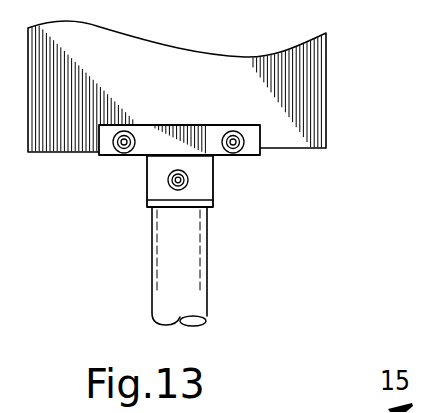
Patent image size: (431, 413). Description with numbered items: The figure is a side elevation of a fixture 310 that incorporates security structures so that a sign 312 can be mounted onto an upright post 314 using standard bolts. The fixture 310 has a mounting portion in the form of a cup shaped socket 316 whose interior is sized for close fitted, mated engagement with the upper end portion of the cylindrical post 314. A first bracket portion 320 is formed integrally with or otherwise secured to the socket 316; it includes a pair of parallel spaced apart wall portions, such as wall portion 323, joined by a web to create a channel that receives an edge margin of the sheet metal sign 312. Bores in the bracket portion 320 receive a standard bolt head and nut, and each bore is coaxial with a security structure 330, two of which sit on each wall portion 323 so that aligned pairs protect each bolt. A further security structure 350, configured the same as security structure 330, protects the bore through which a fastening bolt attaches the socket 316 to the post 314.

The fixture 310 is at (262, 189).
The sign 312 is at (318, 88).
The upright post 314 is at (168, 272).
The cup shaped socket 316 is at (213, 198).
The first bracket portion 320 is at (192, 136).
The wall portion 323 is at (167, 156).
The security structure 330 is at (123, 132).
The security structure 350 is at (179, 186).